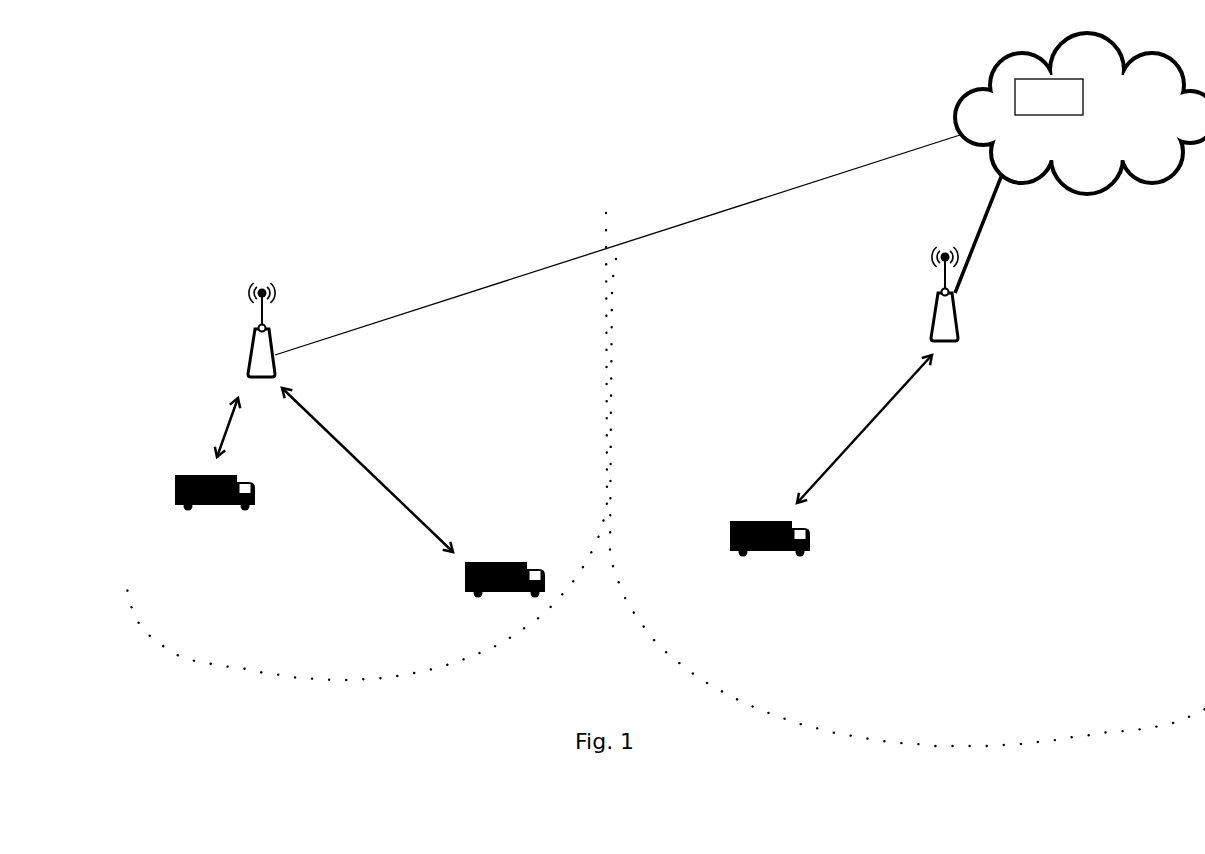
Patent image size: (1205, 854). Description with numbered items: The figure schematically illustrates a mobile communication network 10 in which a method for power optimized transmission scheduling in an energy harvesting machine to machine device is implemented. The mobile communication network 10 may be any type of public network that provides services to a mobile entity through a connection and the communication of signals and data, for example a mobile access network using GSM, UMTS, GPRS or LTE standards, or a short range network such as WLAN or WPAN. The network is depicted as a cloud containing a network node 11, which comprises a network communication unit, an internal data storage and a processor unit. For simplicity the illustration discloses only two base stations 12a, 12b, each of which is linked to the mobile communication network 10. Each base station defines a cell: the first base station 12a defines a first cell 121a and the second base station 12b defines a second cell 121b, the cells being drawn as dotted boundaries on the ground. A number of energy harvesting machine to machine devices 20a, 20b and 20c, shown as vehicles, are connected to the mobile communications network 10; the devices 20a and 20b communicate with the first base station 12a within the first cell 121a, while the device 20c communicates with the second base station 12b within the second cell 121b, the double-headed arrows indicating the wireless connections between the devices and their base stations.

The mobile communication network 10 is at (993, 72).
The network node 11 is at (1049, 97).
The base station 12a is at (250, 348).
The base station 12b is at (958, 317).
The energy harvesting machine to machine device 20a is at (255, 512).
The energy harvesting machine to machine device 20b is at (500, 562).
The energy harvesting machine to machine device 20c is at (810, 557).
The cell 121a is at (447, 660).
The cell 121b is at (708, 668).